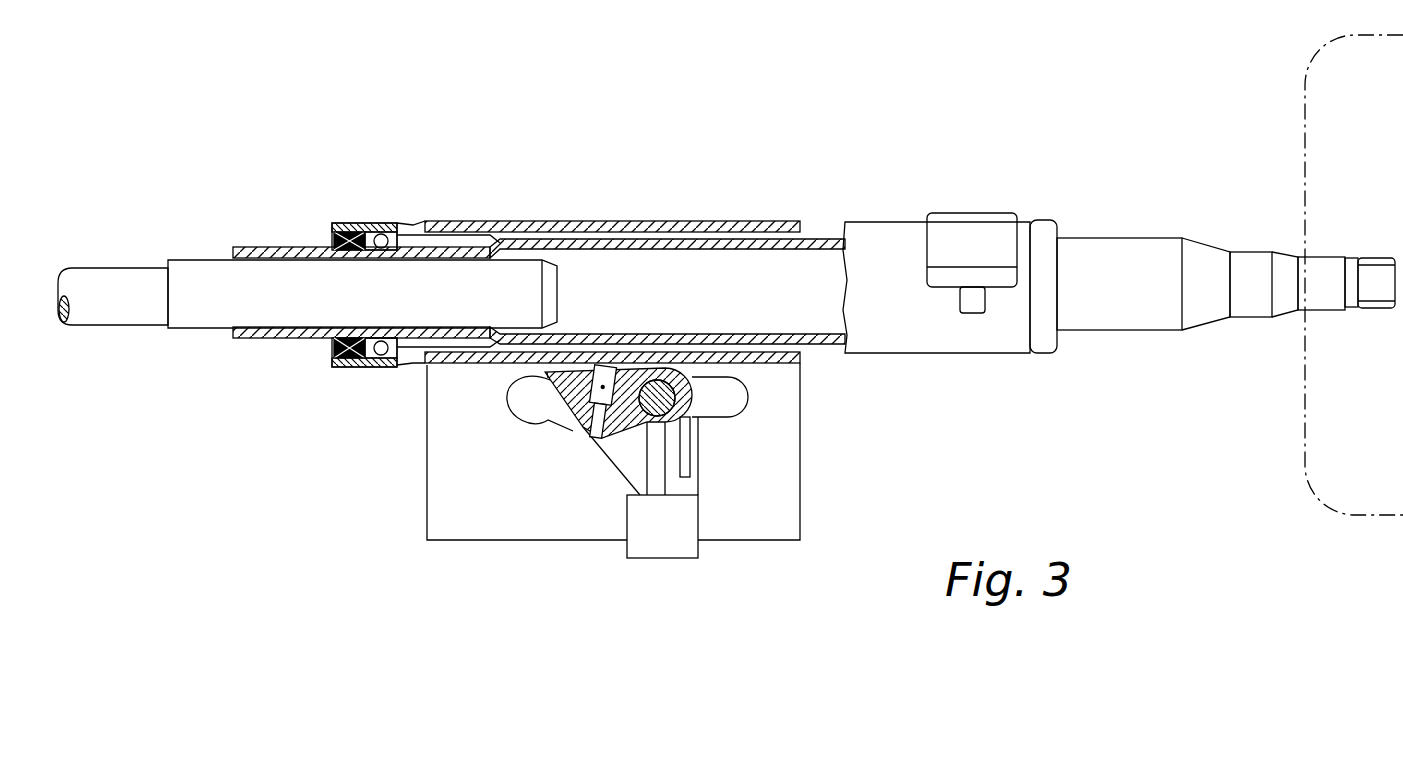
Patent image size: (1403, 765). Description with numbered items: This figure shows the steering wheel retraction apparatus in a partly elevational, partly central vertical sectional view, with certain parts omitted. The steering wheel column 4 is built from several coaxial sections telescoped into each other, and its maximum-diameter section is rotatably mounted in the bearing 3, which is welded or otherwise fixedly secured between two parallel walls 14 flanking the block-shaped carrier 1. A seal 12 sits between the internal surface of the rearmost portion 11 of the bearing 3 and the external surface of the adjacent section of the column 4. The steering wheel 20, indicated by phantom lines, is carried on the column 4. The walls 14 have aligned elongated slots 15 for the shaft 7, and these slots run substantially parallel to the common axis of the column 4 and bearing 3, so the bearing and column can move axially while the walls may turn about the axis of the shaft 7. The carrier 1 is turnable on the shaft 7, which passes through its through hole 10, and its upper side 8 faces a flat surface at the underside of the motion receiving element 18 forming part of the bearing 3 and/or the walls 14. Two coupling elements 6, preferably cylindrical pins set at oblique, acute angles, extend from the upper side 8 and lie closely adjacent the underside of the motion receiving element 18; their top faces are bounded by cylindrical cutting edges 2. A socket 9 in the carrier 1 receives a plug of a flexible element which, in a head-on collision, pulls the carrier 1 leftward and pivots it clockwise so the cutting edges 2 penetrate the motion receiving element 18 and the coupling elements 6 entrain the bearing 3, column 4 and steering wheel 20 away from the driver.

The carrier 1 is at (628, 452).
The cutting edges 2 is at (585, 367).
The bearing 3 is at (882, 240).
The steering wheel column 4 is at (1108, 258).
The coupling elements 6 is at (577, 422).
The shaft 7 is at (697, 400).
The upper side 8 is at (570, 418).
The socket 9 is at (690, 486).
The through hole 10 is at (660, 430).
The rearmost portion 11 is at (402, 223).
The seal 12 is at (378, 222).
The walls 14 is at (443, 510).
The elongated slots 15 is at (737, 397).
The motion receiving element 18 is at (430, 363).
The steering wheel 20 is at (1334, 398).